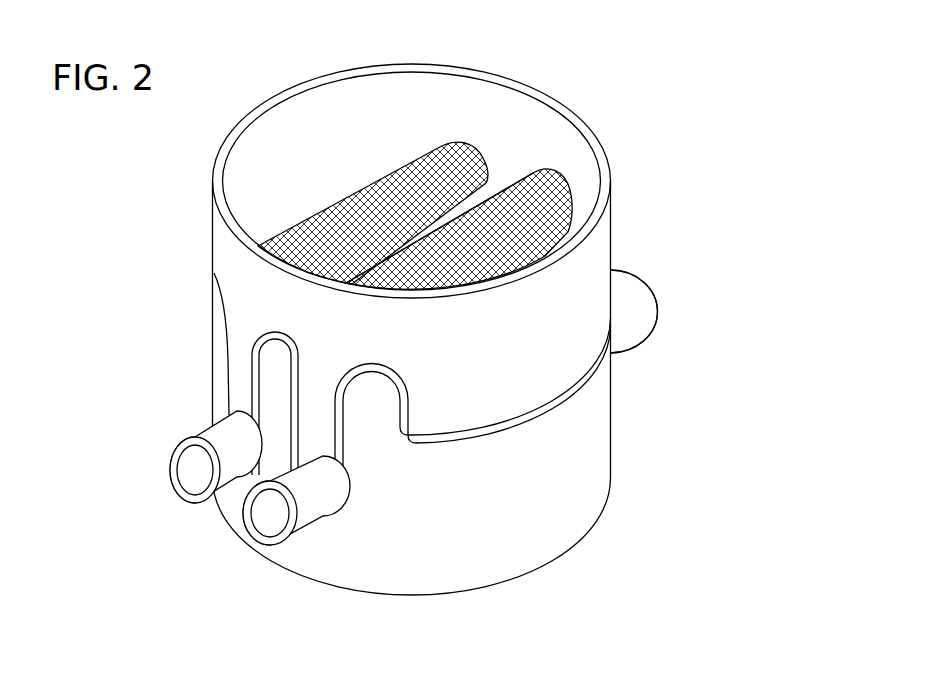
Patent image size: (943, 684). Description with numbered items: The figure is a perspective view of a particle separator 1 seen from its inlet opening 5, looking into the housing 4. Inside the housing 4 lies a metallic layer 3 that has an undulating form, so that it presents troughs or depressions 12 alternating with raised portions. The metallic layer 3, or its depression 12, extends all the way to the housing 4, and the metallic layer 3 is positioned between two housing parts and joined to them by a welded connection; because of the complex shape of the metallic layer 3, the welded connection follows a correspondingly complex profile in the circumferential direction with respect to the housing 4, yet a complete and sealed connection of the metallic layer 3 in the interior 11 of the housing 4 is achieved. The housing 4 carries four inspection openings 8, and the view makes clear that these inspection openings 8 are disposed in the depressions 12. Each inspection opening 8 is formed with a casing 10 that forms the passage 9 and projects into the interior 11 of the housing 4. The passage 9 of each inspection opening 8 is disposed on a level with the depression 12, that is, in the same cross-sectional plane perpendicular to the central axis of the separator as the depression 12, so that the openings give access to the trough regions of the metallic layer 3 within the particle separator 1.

The particle separator 1 is at (423, 345).
The metallic layer 3 is at (557, 197).
The housing 4 is at (230, 243).
The inlet opening 5 is at (532, 90).
The inspection opening 8 is at (188, 457).
The passage 9 is at (182, 474).
The casing 10 is at (204, 433).
The interior 11 is at (423, 128).
The depression 12 is at (367, 246).